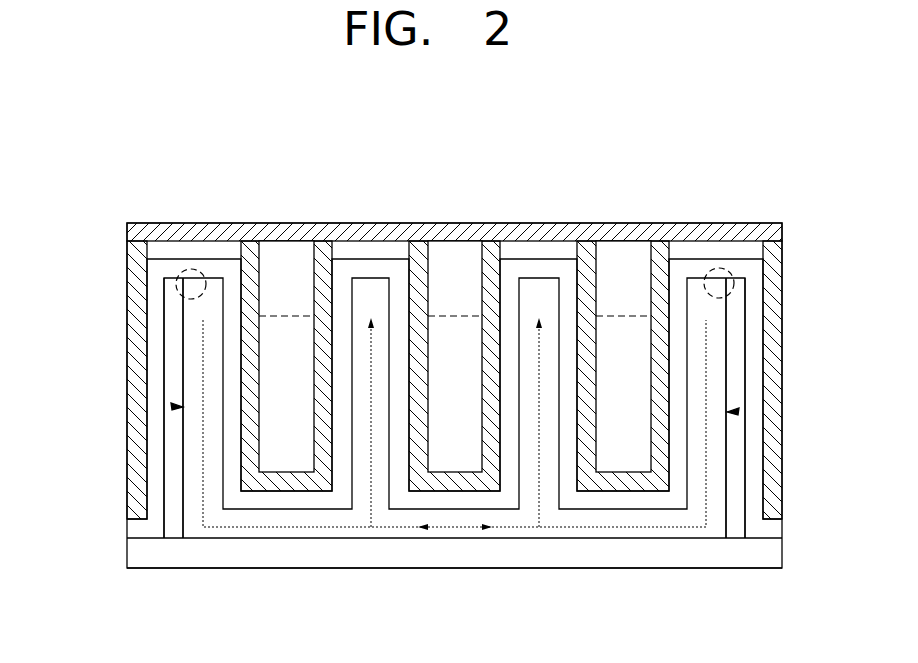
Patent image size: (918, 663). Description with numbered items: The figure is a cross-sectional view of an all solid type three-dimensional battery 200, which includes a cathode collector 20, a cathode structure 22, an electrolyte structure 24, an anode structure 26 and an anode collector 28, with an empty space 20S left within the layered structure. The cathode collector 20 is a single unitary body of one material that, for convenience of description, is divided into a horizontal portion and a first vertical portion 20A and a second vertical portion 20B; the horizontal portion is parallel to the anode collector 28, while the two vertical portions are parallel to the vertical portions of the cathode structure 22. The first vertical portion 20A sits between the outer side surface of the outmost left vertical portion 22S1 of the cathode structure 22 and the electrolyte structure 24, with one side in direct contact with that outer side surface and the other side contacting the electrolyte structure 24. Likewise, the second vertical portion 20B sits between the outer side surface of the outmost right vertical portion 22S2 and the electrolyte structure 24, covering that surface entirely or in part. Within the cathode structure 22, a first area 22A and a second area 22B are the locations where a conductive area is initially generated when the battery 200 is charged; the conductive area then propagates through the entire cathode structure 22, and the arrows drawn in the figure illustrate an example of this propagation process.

The all solid type 3D battery 200 is at (127, 217).
The cathode collector 20 is at (320, 557).
The first vertical portion 20A is at (175, 335).
The second vertical portion 20B is at (735, 312).
The empty space 20S is at (455, 258).
The cathode structure 22 is at (718, 458).
The first area 22A is at (191, 270).
The second area 22B is at (720, 269).
The outmost left vertical portion 22S1 is at (175, 406).
The outmost right vertical portion 22S2 is at (735, 411).
The electrolyte structure 24 is at (756, 355).
The anode structure 26 is at (771, 270).
The anode collector 28 is at (663, 225).